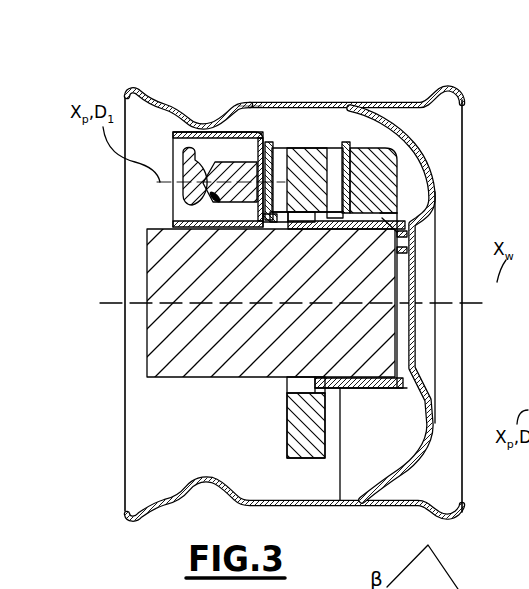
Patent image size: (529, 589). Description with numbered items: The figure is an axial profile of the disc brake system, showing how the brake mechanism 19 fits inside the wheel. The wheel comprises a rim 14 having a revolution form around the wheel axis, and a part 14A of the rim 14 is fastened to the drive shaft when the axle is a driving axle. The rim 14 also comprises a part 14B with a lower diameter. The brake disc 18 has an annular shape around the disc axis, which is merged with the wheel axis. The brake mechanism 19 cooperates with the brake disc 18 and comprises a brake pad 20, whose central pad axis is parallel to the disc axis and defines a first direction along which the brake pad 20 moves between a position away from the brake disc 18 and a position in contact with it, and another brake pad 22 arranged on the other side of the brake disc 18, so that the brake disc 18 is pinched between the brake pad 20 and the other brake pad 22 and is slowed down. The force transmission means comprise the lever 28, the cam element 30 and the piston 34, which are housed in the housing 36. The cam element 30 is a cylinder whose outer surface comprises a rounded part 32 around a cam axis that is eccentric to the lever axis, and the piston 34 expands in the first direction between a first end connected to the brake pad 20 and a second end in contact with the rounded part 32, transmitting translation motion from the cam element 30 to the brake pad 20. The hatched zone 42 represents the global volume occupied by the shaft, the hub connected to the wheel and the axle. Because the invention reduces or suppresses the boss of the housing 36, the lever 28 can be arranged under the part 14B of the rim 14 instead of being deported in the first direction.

The rim 14 is at (410, 105).
The part of the rim 14A is at (431, 148).
The part with a lower diameter 14B is at (187, 100).
The brake disc 18 is at (305, 125).
The brake mechanism 19 is at (247, 88).
The brake pad 20 is at (279, 117).
The other brake pad 22 is at (363, 131).
The lever 28 is at (186, 150).
The cam element 30 is at (174, 215).
The rounded part 32 is at (220, 200).
The piston 34 is at (233, 174).
The housing 36 is at (257, 115).
The hatched zone 42 is at (376, 337).